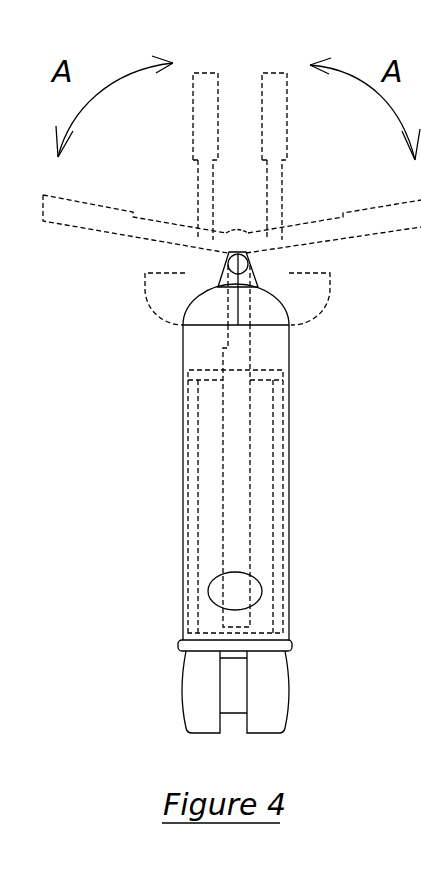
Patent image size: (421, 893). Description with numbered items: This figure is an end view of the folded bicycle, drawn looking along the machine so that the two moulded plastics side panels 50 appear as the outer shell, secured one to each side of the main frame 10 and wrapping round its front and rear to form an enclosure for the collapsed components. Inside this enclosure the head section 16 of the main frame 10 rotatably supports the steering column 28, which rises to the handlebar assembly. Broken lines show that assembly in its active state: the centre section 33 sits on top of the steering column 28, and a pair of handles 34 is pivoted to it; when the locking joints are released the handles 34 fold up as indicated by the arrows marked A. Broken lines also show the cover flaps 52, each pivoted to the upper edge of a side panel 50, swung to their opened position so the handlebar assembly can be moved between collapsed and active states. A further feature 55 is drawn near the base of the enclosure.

The main frame 10 is at (192, 482).
The head section 16 is at (238, 402).
The steering column 28 is at (240, 335).
The centre section 33 is at (245, 232).
The handles 34 is at (155, 223).
The side panels 50 is at (185, 520).
The cover flap 52 is at (172, 285).
The opening 55 is at (210, 598).